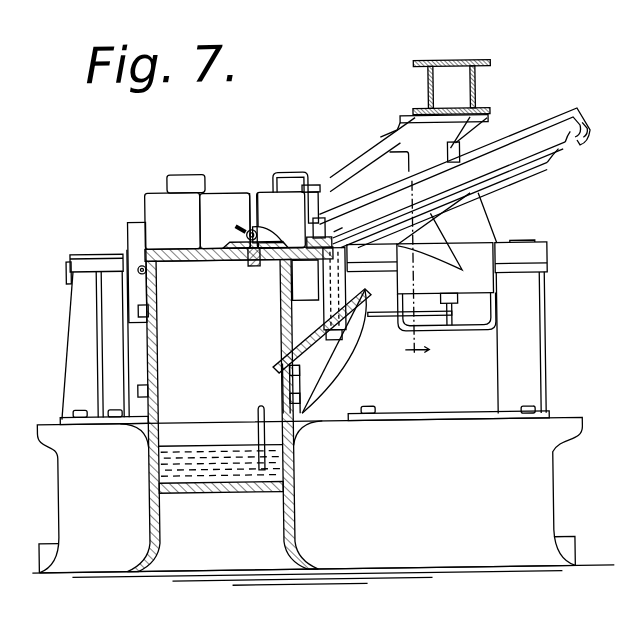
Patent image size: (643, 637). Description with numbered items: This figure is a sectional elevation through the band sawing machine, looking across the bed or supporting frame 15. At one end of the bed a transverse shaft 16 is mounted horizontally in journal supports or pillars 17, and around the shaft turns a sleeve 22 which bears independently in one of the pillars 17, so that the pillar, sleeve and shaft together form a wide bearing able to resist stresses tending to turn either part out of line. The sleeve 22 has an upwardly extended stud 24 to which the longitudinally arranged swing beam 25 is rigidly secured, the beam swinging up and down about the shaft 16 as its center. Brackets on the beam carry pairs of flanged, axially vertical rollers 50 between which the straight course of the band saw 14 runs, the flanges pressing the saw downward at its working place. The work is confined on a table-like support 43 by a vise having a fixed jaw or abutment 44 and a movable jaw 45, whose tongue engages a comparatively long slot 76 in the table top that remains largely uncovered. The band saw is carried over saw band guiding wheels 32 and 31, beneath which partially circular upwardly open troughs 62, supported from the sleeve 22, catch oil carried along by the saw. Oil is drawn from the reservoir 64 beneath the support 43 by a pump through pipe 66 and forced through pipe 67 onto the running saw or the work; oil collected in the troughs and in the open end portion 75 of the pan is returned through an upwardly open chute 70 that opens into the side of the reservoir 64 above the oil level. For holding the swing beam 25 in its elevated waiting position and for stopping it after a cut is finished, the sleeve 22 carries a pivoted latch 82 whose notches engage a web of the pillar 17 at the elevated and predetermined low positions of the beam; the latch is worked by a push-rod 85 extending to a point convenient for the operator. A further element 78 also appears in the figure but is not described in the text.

The band saw 14 is at (301, 242).
The bed or supporting frame 15 is at (322, 502).
The transverse shaft 16 is at (70, 264).
The journal supports or pillars 17 is at (96, 324).
The sleeve 22 is at (420, 285).
The stud 24 is at (409, 118).
The swing beam 25 is at (470, 94).
The second saw band guiding wheel 31 is at (571, 146).
The saw band guiding wheel 32 is at (548, 171).
The table-like support 43 is at (198, 261).
The fixed jaw or abutment 44 is at (175, 212).
The movable jaw 45 is at (244, 220).
The axially vertical rollers 50 is at (332, 240).
The partially circular upwardly open trough 62 is at (595, 137).
The reservoir 64 is at (208, 479).
The pipe 66 is at (258, 415).
The pipe 67 is at (287, 179).
The upwardly open chute 70 is at (340, 341).
The open end portion 75 is at (314, 299).
The slot 76 is at (251, 263).
The center line / funnel 78 is at (447, 267).
The latch 82 is at (457, 317).
The push-rod 85 is at (379, 308).